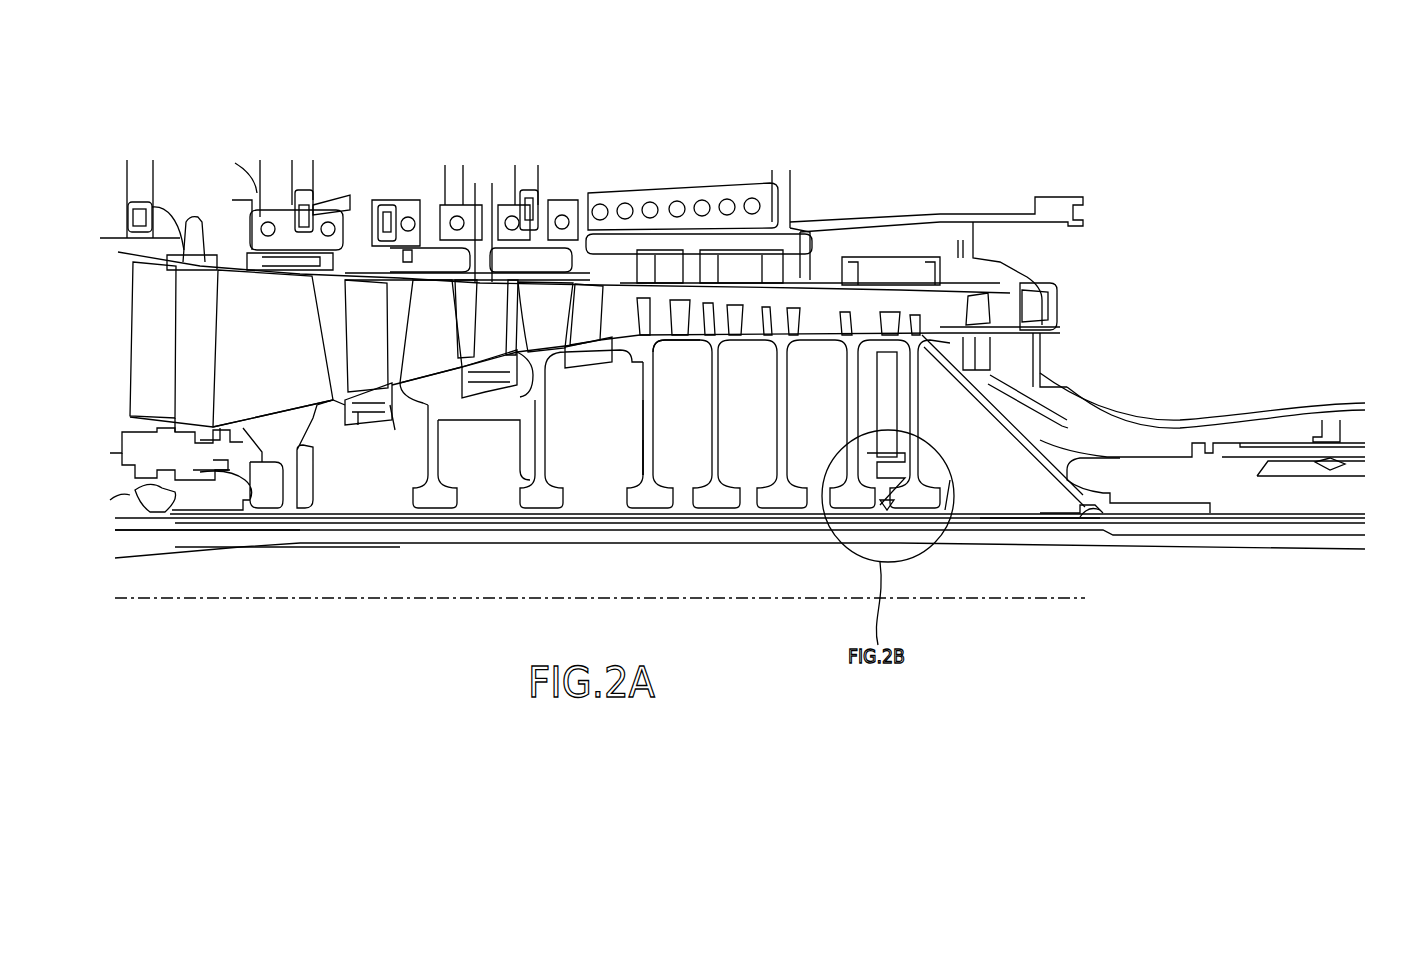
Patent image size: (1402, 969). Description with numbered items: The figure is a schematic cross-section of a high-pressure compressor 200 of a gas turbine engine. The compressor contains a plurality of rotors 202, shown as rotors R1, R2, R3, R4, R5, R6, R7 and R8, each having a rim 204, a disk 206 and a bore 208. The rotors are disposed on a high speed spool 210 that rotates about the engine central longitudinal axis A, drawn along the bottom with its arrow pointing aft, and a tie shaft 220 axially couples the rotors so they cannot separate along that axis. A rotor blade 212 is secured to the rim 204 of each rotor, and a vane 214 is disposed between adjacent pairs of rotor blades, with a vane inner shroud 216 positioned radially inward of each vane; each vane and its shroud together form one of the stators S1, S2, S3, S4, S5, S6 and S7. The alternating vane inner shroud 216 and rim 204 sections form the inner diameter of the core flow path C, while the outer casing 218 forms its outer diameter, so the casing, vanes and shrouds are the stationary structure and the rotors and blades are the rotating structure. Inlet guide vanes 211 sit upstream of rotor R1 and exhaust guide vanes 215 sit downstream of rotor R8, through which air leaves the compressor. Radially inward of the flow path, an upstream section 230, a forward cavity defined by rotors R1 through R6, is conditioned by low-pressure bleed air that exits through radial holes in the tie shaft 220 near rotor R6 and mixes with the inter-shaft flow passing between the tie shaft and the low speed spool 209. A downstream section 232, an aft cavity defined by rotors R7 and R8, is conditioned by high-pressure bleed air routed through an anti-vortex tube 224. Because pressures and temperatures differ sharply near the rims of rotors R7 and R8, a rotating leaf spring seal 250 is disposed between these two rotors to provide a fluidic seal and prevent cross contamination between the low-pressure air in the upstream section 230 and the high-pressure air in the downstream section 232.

The high-pressure compressor 200 is at (258, 114).
The rotors 202 is at (612, 416).
The rim 204 is at (660, 360).
The disk 206 is at (655, 412).
The bore 208 is at (643, 465).
The low speed spool 209 is at (278, 545).
The high speed spool 210 is at (182, 523).
The inlet guide vanes 211 is at (213, 346).
The rotor blade 212 is at (302, 359).
The vane 214 is at (385, 328).
The exhaust guide vanes 215 is at (965, 313).
The vane inner shroud 216 is at (385, 418).
The outer casing 218 is at (403, 250).
The tie shaft 220 is at (990, 522).
The anti-vortex tube 224 is at (897, 378).
The upstream section 230 is at (597, 493).
The downstream section 232 is at (862, 410).
The rotating leaf spring seal 250 is at (905, 472).
The engine central longitudinal axis A is at (976, 600).
The core flow path C is at (458, 294).
The stator S1 is at (368, 385).
The stator S2 is at (486, 339).
The stator S3 is at (588, 326).
The stator S4 is at (690, 320).
The stator S5 is at (748, 312).
The stator S6 is at (805, 325).
The stator S7 is at (890, 322).
The rotor R1 is at (266, 454).
The rotor R2 is at (471, 456).
The rotor R3 is at (581, 429).
The rotor R4 is at (669, 424).
The rotor R5 is at (735, 424).
The rotor R6 is at (802, 424).
The rotor R7 is at (870, 424).
The rotor R8 is at (920, 425).